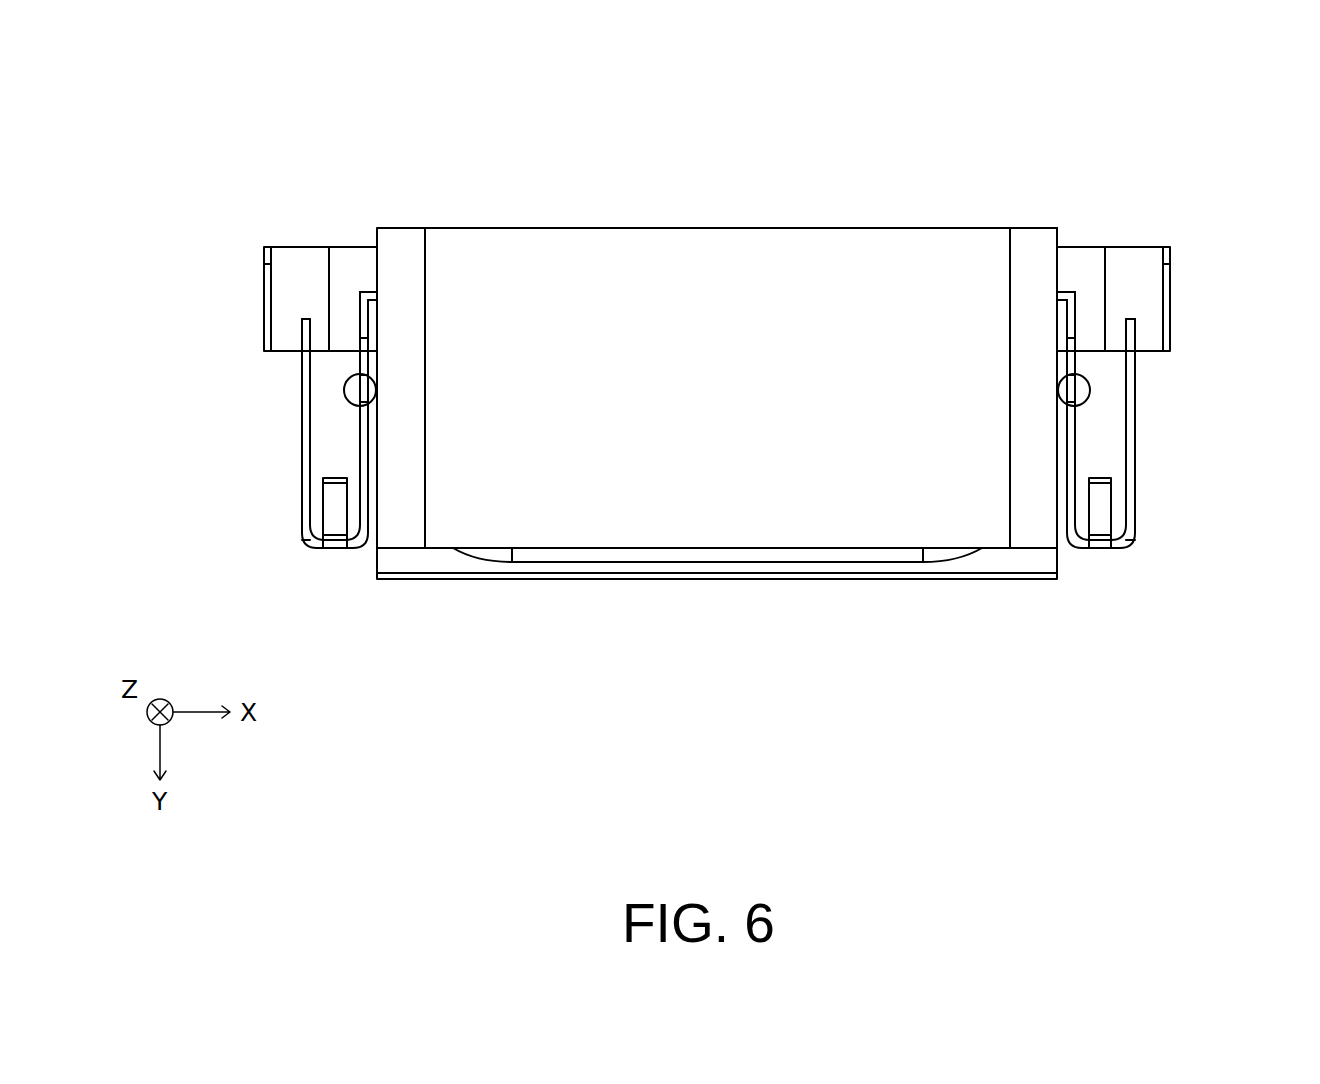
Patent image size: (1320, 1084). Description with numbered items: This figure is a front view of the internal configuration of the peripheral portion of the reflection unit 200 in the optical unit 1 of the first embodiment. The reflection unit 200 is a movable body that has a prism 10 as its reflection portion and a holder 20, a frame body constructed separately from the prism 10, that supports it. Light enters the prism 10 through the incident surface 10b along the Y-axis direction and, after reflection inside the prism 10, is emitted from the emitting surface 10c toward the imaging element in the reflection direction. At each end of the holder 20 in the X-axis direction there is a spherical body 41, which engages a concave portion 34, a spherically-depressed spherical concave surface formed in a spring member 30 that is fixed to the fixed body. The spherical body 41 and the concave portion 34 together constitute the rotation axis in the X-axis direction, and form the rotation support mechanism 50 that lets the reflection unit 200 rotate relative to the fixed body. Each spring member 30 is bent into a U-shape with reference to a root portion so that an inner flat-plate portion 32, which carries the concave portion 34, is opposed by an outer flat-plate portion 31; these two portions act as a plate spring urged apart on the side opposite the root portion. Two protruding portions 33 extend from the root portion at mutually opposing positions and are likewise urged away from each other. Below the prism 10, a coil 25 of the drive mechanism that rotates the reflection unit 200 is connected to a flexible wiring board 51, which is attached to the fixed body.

The reflection unit 200 is at (779, 163).
The optical unit 1 is at (1160, 168).
The prism 10 is at (883, 228).
The incident surface 10b is at (677, 228).
The emitting surface 10c is at (563, 288).
The holder 20 is at (1021, 228).
The coil 25 is at (860, 560).
The flexible wiring board 51 is at (343, 258).
The spring member 30 is at (302, 403).
The outer flat-plate portion 31 is at (302, 364).
The inner flat-plate portion 32 is at (360, 445).
The protruding portion 33 is at (336, 502).
The concave portion 34 is at (356, 372).
The spherical body 41 is at (375, 383).
The rotation support mechanism 50 is at (284, 553).